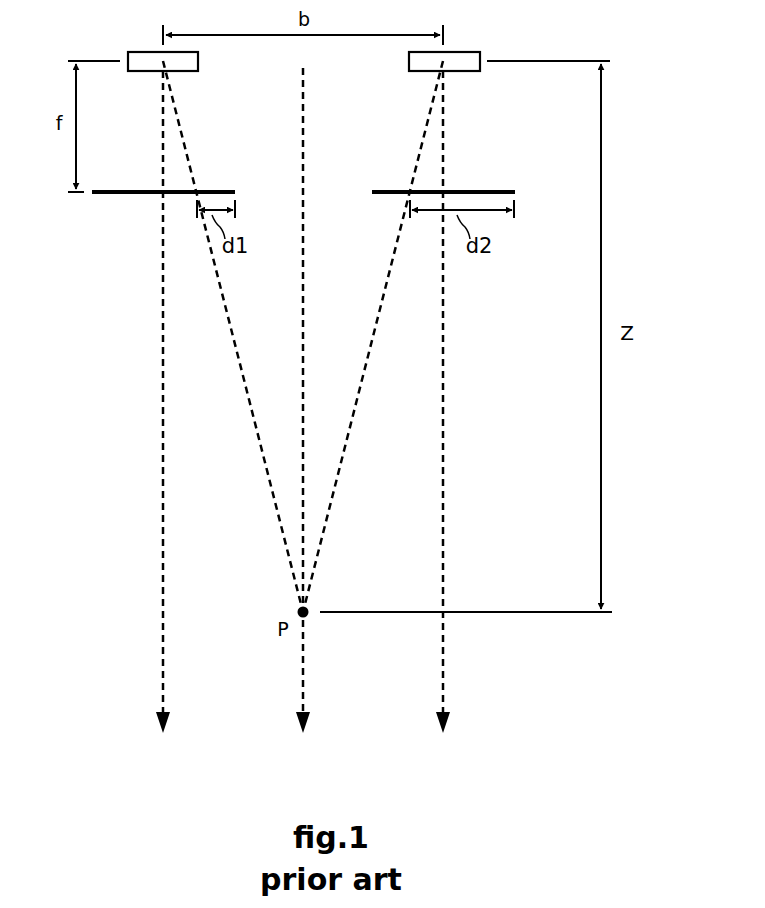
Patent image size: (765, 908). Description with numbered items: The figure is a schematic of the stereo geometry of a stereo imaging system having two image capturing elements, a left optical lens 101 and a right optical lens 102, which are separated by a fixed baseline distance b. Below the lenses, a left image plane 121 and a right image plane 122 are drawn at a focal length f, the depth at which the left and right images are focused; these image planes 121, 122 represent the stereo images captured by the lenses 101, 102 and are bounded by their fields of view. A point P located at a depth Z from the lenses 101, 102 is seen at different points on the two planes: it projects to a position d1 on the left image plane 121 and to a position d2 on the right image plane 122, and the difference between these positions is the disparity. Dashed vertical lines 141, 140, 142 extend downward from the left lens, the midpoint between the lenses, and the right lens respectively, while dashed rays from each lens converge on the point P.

The left optical lens 101 is at (199, 62).
The right optical lens 102 is at (408, 62).
The left image plane 121 is at (121, 195).
The right image plane 122 is at (470, 189).
The central axis 140 is at (301, 663).
The optical axis of first camera 141 is at (161, 663).
The optical axis of second camera 142 is at (441, 663).